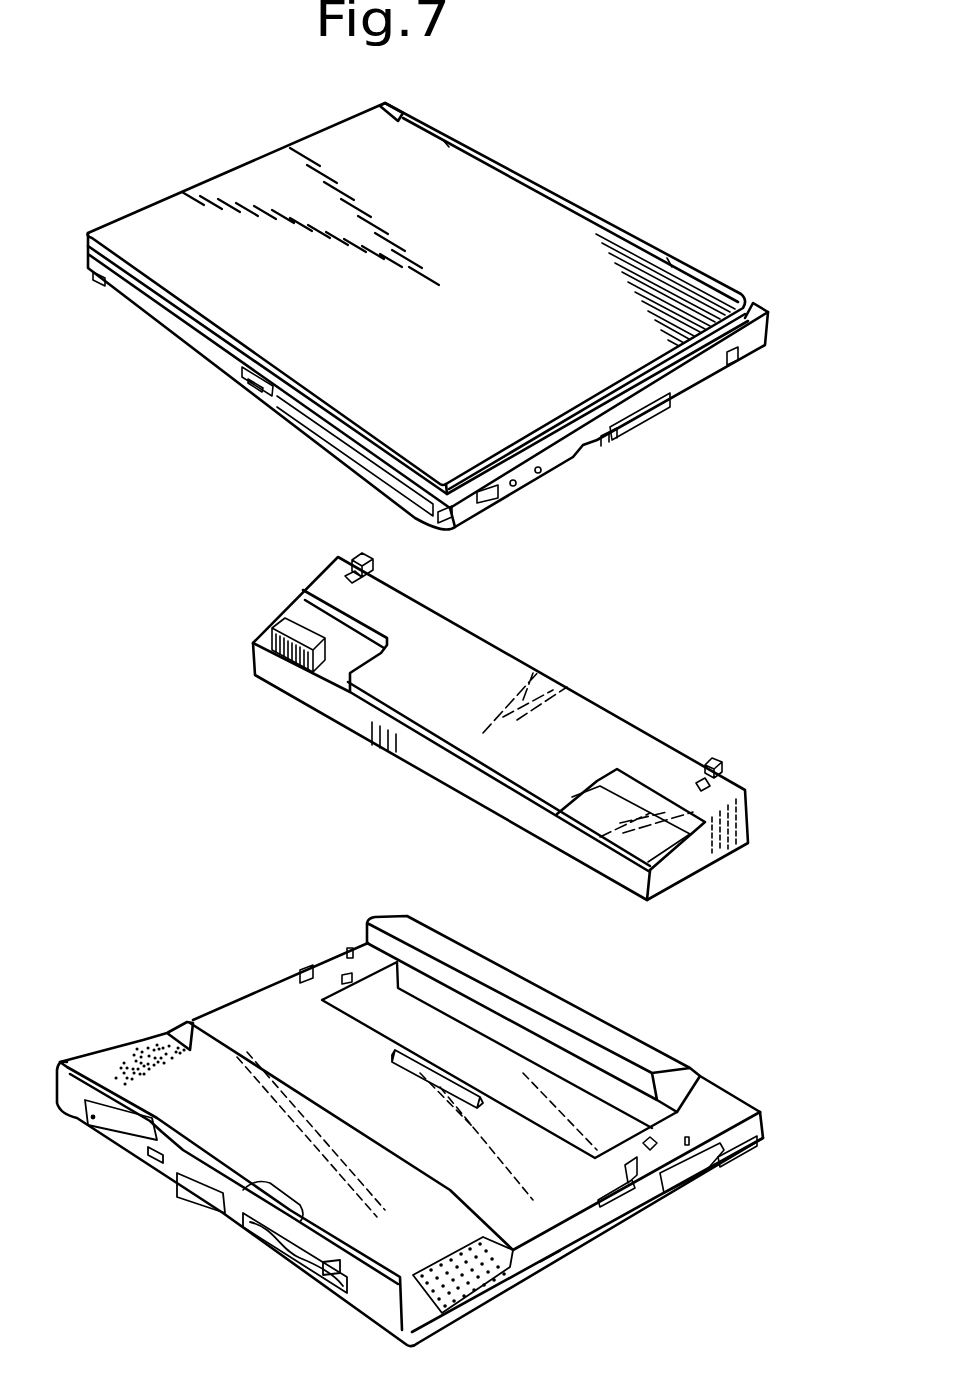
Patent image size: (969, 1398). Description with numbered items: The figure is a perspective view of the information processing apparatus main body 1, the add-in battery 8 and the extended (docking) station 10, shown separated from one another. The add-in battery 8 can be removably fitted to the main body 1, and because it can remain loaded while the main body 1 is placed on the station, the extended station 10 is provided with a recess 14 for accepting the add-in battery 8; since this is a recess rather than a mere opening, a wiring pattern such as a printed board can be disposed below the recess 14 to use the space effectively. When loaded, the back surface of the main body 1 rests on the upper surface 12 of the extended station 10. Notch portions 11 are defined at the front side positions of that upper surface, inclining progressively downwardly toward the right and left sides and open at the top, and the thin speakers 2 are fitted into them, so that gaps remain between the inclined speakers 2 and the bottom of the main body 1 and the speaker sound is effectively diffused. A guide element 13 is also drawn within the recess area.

The information processing apparatus main body 1 is at (552, 178).
The speaker 2 is at (482, 1275).
The add-in battery 8 is at (530, 650).
The extended station 10 is at (230, 998).
The notch portion 11 is at (540, 1265).
The upper surface 12 is at (180, 1083).
The guide rail 13 is at (423, 1063).
The recess 14 is at (513, 1063).